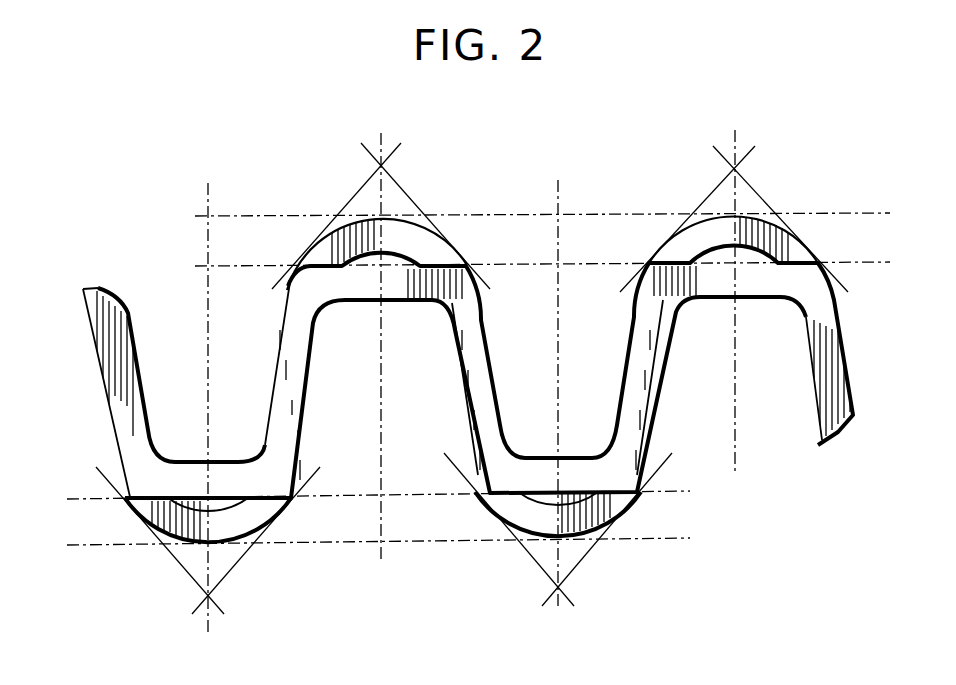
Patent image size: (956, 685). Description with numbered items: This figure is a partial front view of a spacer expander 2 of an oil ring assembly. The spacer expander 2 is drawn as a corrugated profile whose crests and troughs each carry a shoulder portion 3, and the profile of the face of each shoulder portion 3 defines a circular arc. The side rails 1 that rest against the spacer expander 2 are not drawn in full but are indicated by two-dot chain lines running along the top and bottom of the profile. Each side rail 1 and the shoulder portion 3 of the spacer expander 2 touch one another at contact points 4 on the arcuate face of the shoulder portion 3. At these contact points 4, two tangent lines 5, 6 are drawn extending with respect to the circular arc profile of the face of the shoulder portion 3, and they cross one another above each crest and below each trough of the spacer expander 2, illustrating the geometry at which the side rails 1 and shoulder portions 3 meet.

The side rail 1 is at (243, 232).
The spacer expander 2 is at (472, 347).
The shoulder portion 3 is at (345, 222).
The contact points 4 is at (312, 245).
The tangent line 5 is at (362, 188).
The tangent line 6 is at (405, 188).